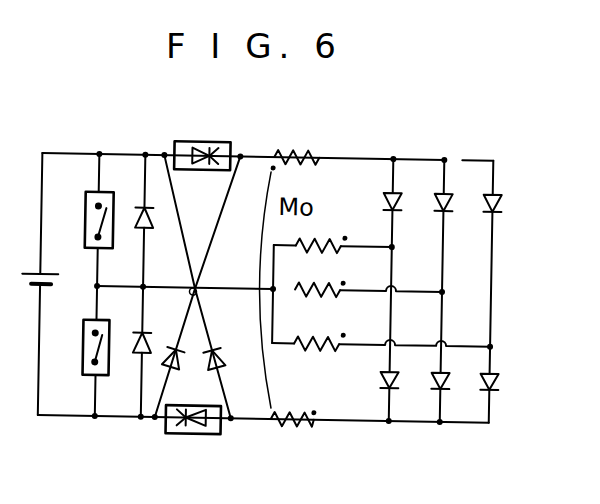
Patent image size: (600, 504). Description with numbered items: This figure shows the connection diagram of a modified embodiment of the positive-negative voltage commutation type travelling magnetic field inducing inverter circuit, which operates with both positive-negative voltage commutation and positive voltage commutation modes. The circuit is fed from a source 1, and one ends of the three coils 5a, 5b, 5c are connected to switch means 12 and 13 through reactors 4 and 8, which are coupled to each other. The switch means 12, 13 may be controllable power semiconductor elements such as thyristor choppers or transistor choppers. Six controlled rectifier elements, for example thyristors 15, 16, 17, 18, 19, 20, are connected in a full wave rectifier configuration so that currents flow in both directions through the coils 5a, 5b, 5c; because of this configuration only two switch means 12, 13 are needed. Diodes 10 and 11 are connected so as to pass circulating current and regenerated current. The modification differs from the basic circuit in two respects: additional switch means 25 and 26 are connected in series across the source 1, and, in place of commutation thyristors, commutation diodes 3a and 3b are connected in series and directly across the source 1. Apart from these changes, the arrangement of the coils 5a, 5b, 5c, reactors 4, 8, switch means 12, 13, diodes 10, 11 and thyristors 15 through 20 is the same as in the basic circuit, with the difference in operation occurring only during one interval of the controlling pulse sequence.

The source 1 is at (33, 272).
The commutation diode 3a is at (150, 222).
The commutation diode 3b is at (148, 332).
The reactor 4 is at (315, 140).
The coil 5a is at (338, 240).
The coil 5b is at (338, 284).
The coil 5c is at (338, 336).
The reactor 8 is at (316, 434).
The diode 10 is at (225, 356).
The diode 11 is at (180, 357).
The switch means 12 is at (176, 141).
The switch means 13 is at (188, 433).
The thyristor 15 is at (396, 200).
The thyristor 16 is at (447, 378).
The thyristor 17 is at (496, 200).
The thyristor 18 is at (396, 378).
The thyristor 19 is at (447, 200).
The thyristor 20 is at (496, 378).
The switch means 25 is at (84, 232).
The switch means 26 is at (84, 338).